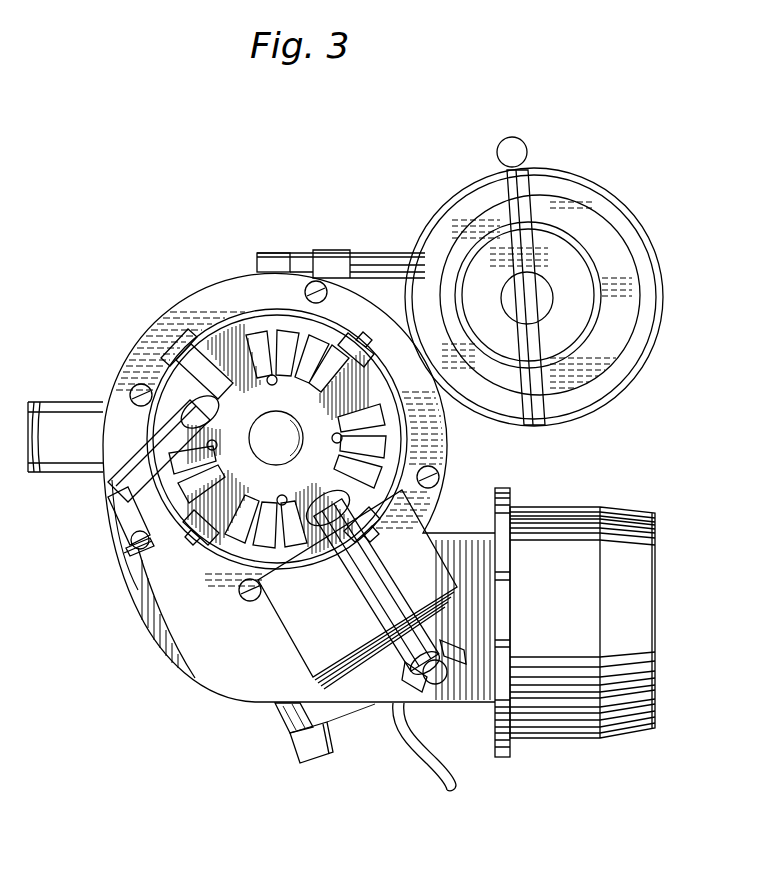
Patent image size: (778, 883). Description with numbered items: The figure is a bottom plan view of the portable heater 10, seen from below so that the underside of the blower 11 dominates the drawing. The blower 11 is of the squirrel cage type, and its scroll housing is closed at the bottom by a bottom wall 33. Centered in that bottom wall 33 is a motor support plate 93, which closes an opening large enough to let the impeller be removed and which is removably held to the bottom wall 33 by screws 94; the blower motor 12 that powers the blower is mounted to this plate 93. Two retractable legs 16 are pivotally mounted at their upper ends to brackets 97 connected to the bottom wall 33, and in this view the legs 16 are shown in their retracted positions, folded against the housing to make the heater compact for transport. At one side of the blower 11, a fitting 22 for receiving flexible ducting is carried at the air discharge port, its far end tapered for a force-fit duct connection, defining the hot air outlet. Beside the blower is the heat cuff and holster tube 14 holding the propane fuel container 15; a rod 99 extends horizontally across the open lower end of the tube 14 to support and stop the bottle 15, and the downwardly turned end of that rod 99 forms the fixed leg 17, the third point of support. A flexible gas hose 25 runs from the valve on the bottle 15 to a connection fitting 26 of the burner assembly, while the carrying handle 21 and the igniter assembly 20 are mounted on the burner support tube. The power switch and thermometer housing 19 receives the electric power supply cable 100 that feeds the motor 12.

The heater 10 is at (158, 748).
The blower 11 is at (190, 640).
The motor 12 is at (218, 320).
The heat cuff and holster tube 14 is at (544, 272).
The fuel container 15 is at (556, 215).
The retractable legs 16 is at (118, 493).
The fixed leg 17 is at (506, 138).
The power switch and thermometer housing 19 is at (293, 715).
The igniter assembly 20 is at (312, 748).
The carrying handle 21 is at (48, 403).
The fitting 22 is at (567, 740).
The flexible gas hose 25 is at (372, 262).
The connection fitting 26 is at (272, 262).
The bottom wall 33 is at (138, 583).
The motor support plate 93 is at (185, 630).
The screws 94 is at (130, 392).
The brackets 97 is at (137, 557).
The rod 99 is at (503, 187).
The electric power supply cable 100 is at (422, 770).